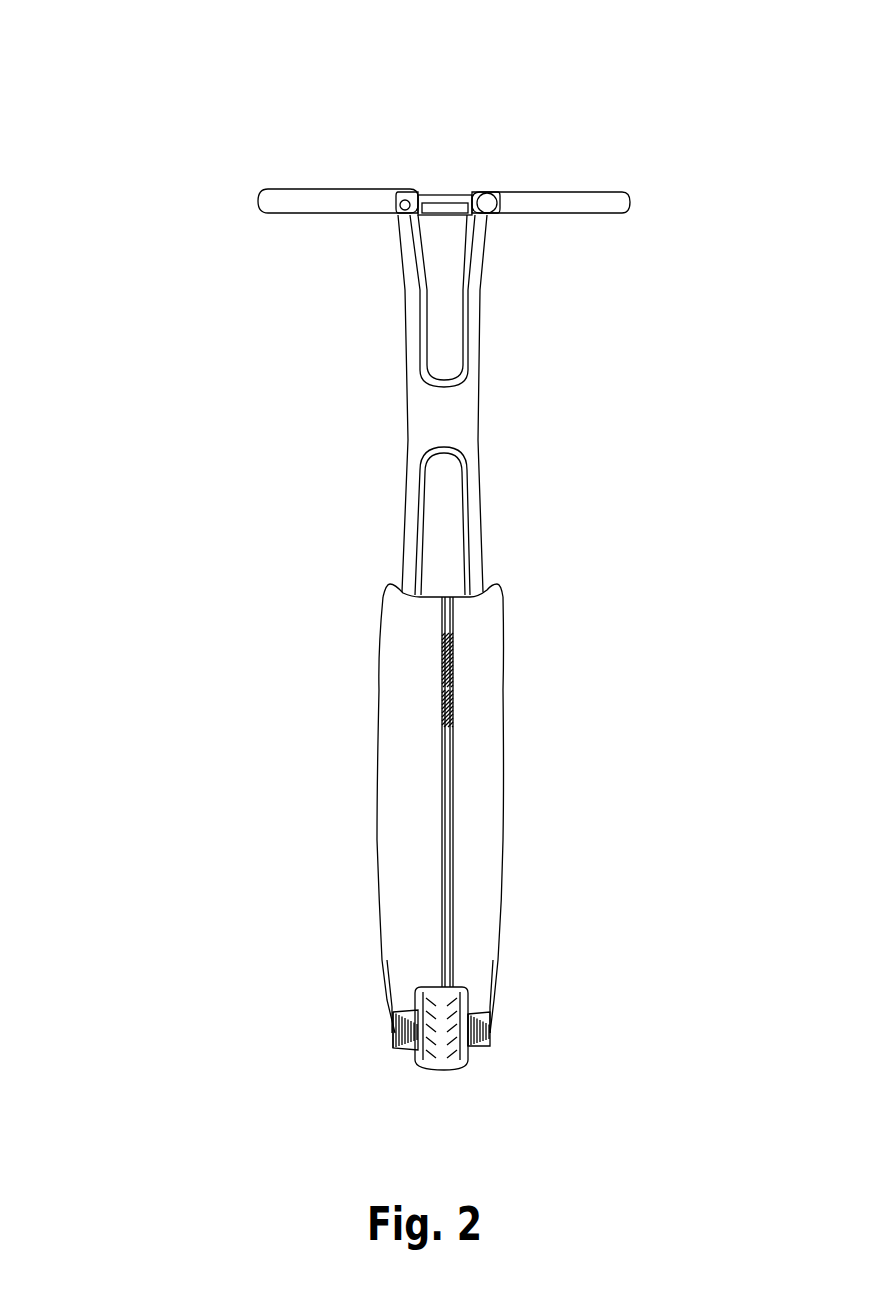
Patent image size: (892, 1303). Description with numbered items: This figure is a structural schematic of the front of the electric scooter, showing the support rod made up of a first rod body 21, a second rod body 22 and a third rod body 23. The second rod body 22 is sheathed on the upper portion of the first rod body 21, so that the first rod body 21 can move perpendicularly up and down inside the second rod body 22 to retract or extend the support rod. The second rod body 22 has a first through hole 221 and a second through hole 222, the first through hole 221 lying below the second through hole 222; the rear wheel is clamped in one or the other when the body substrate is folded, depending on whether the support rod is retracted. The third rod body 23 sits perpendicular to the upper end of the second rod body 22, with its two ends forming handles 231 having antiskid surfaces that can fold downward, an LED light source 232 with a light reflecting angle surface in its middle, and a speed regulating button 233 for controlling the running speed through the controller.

The deck / base board 21 is at (505, 732).
The stem / steering column 22 is at (585, 405).
The lower slot of stem 221 is at (445, 555).
The upper slot of stem 222 is at (443, 315).
The handlebar assembly 23 is at (448, 109).
The handle grip 231 is at (298, 202).
The central connecting block 232 is at (452, 195).
The pivot joint 233 is at (397, 203).